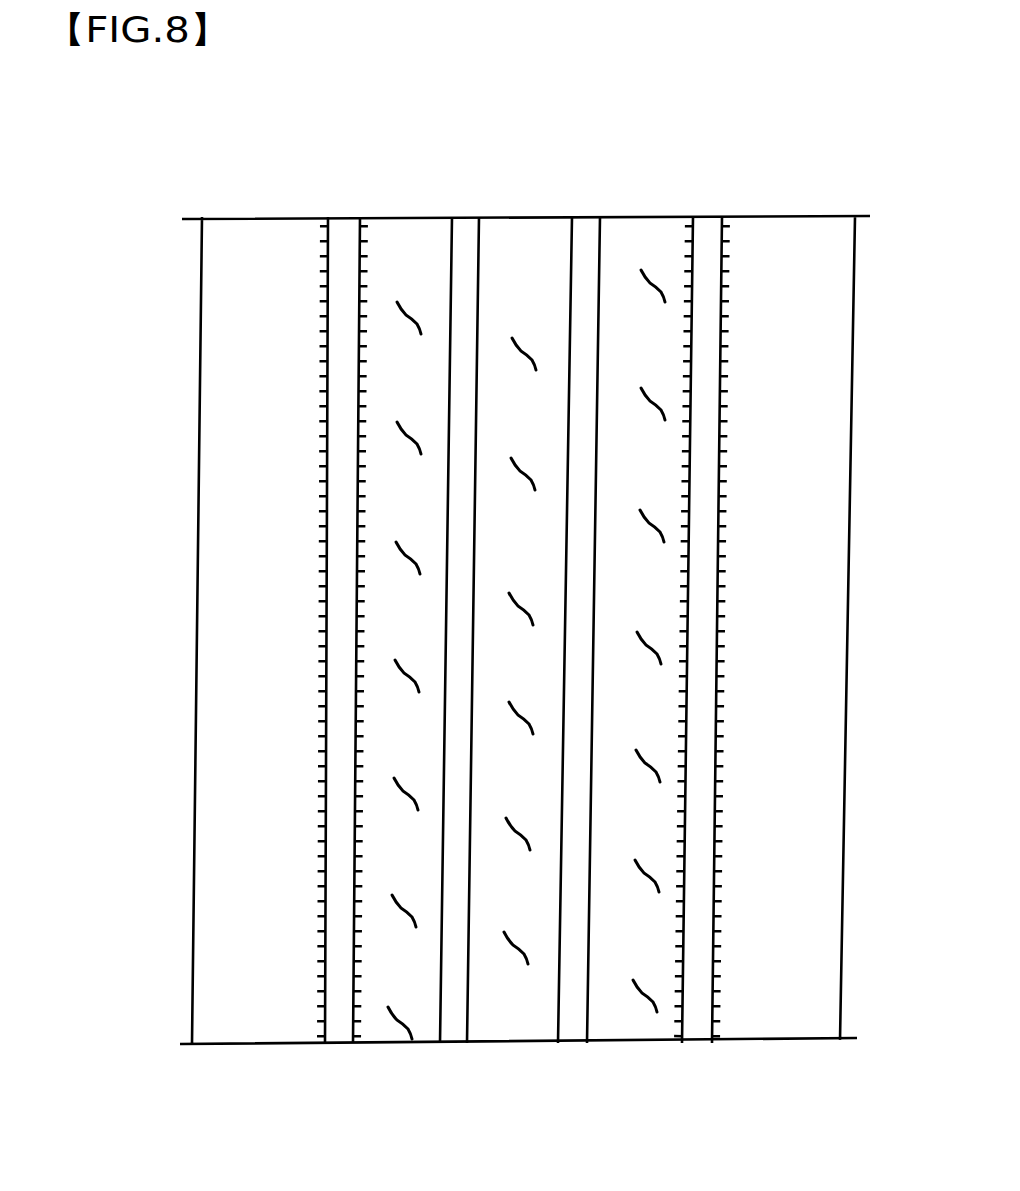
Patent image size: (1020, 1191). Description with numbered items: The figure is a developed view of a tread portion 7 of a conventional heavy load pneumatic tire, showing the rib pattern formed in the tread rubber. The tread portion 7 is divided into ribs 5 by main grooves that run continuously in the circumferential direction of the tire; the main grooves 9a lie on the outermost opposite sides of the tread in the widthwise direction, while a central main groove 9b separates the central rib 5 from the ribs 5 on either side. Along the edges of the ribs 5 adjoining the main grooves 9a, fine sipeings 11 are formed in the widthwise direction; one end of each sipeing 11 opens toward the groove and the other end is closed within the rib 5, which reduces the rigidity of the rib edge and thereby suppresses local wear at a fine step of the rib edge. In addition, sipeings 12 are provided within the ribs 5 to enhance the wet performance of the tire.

The rib 5 is at (530, 223).
The tread portion 7 is at (828, 190).
The main groove 9a is at (347, 228).
The central main groove 9b is at (589, 222).
The sipeing 11 is at (322, 242).
The sipeing 12 is at (635, 987).